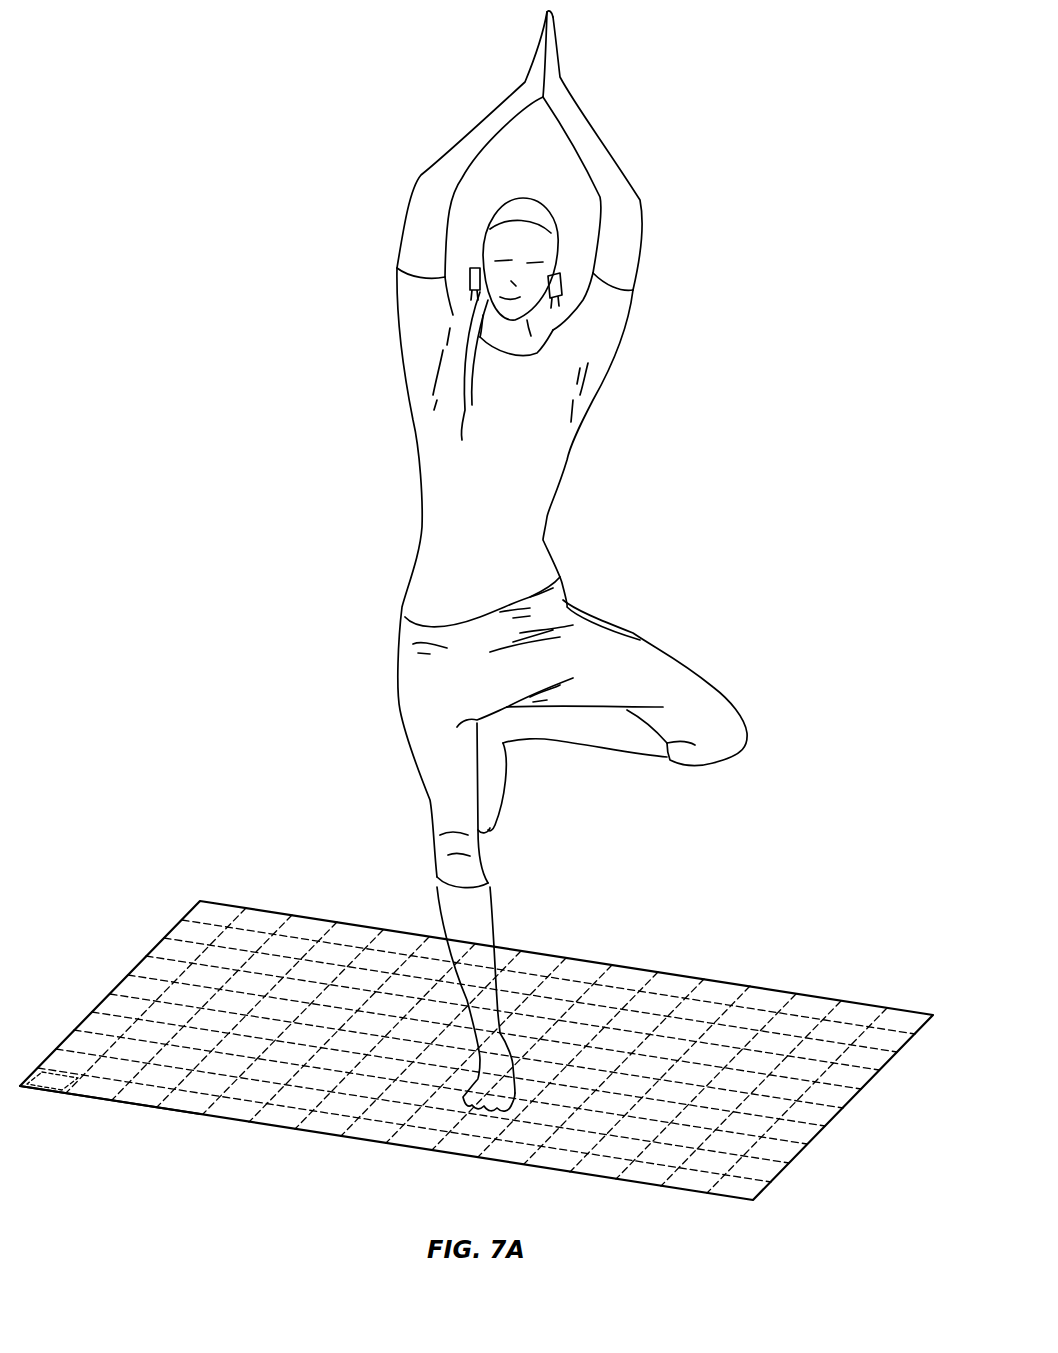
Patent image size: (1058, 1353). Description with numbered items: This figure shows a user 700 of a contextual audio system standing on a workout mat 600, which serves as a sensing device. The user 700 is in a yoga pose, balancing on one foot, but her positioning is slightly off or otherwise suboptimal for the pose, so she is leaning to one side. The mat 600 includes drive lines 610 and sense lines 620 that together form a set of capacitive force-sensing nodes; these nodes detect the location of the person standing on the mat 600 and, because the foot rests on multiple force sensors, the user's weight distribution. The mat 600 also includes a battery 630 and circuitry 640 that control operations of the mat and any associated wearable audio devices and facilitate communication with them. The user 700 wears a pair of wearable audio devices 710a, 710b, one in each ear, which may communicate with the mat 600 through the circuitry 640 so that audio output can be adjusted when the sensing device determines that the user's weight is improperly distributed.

The workout mat 600 is at (476, 1043).
The drive lines 610 is at (553, 970).
The sense lines 620 is at (340, 943).
The battery 630 is at (40, 1090).
The circuitry 640 is at (93, 1097).
The user 700 is at (572, 561).
The wearable audio device 710a is at (475, 267).
The wearable audio device 710b is at (562, 273).